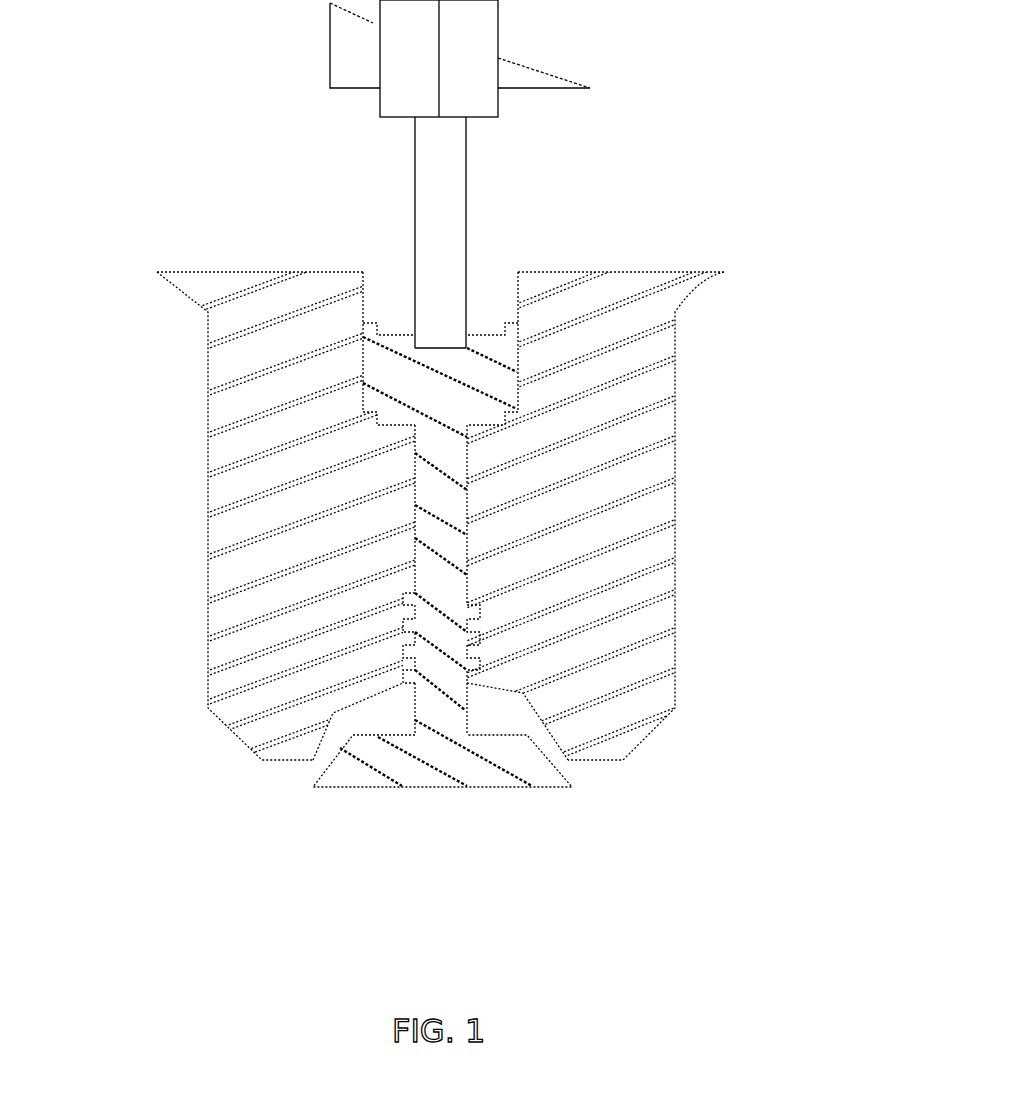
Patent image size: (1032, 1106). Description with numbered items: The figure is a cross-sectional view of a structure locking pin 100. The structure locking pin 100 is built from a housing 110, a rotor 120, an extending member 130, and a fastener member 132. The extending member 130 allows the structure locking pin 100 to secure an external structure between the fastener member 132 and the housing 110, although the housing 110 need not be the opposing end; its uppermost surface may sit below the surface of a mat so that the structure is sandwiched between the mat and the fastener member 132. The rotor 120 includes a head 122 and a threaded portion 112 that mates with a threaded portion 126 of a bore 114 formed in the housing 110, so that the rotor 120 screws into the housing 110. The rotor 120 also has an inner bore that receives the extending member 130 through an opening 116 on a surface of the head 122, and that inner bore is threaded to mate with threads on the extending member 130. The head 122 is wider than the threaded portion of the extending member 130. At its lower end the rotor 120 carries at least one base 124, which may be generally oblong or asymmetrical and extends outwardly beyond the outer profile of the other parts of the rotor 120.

The structure locking pin 100 is at (162, 551).
The housing 110 is at (208, 393).
The threaded portion 112 is at (470, 605).
The bore 114 is at (467, 490).
The opening 116 is at (437, 348).
The rotor 120 is at (435, 703).
The head 122 is at (493, 371).
The base 124 is at (470, 778).
The threaded portion 126 is at (393, 650).
The extending member 130 is at (466, 168).
The fastener member 132 is at (333, 48).